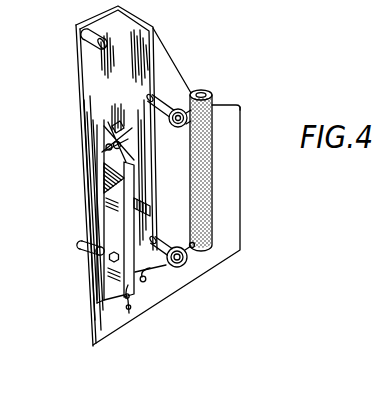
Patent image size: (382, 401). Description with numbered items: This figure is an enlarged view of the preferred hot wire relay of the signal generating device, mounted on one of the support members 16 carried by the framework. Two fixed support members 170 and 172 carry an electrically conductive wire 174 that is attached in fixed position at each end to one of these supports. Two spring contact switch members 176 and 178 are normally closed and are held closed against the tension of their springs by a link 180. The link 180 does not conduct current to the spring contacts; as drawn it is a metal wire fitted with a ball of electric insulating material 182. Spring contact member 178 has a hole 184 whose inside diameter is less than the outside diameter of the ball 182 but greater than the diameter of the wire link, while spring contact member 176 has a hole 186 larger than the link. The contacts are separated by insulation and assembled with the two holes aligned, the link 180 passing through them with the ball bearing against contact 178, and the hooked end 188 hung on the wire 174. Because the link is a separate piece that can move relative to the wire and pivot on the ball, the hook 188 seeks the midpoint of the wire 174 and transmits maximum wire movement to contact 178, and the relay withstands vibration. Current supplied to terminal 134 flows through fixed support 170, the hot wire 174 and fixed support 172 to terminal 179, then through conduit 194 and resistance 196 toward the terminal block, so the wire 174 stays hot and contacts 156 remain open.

The support member 16 is at (243, 106).
The terminal 134 is at (137, 302).
The contacts 156 is at (125, 128).
The fixed support member 170 is at (93, 254).
The fixed support member 172 is at (96, 44).
The electrically conductive wire 174 is at (97, 100).
The spring contact switch member 176 is at (112, 131).
The spring contact switch member 178 is at (128, 172).
The terminal 179 is at (144, 282).
The link 180 is at (106, 146).
The ball of electric insulating material 182 is at (128, 134).
The hole 184 is at (122, 150).
The hole 186 is at (110, 158).
The hooked end 188 is at (108, 149).
The conduit 194 is at (183, 268).
The resistance 196 is at (204, 166).